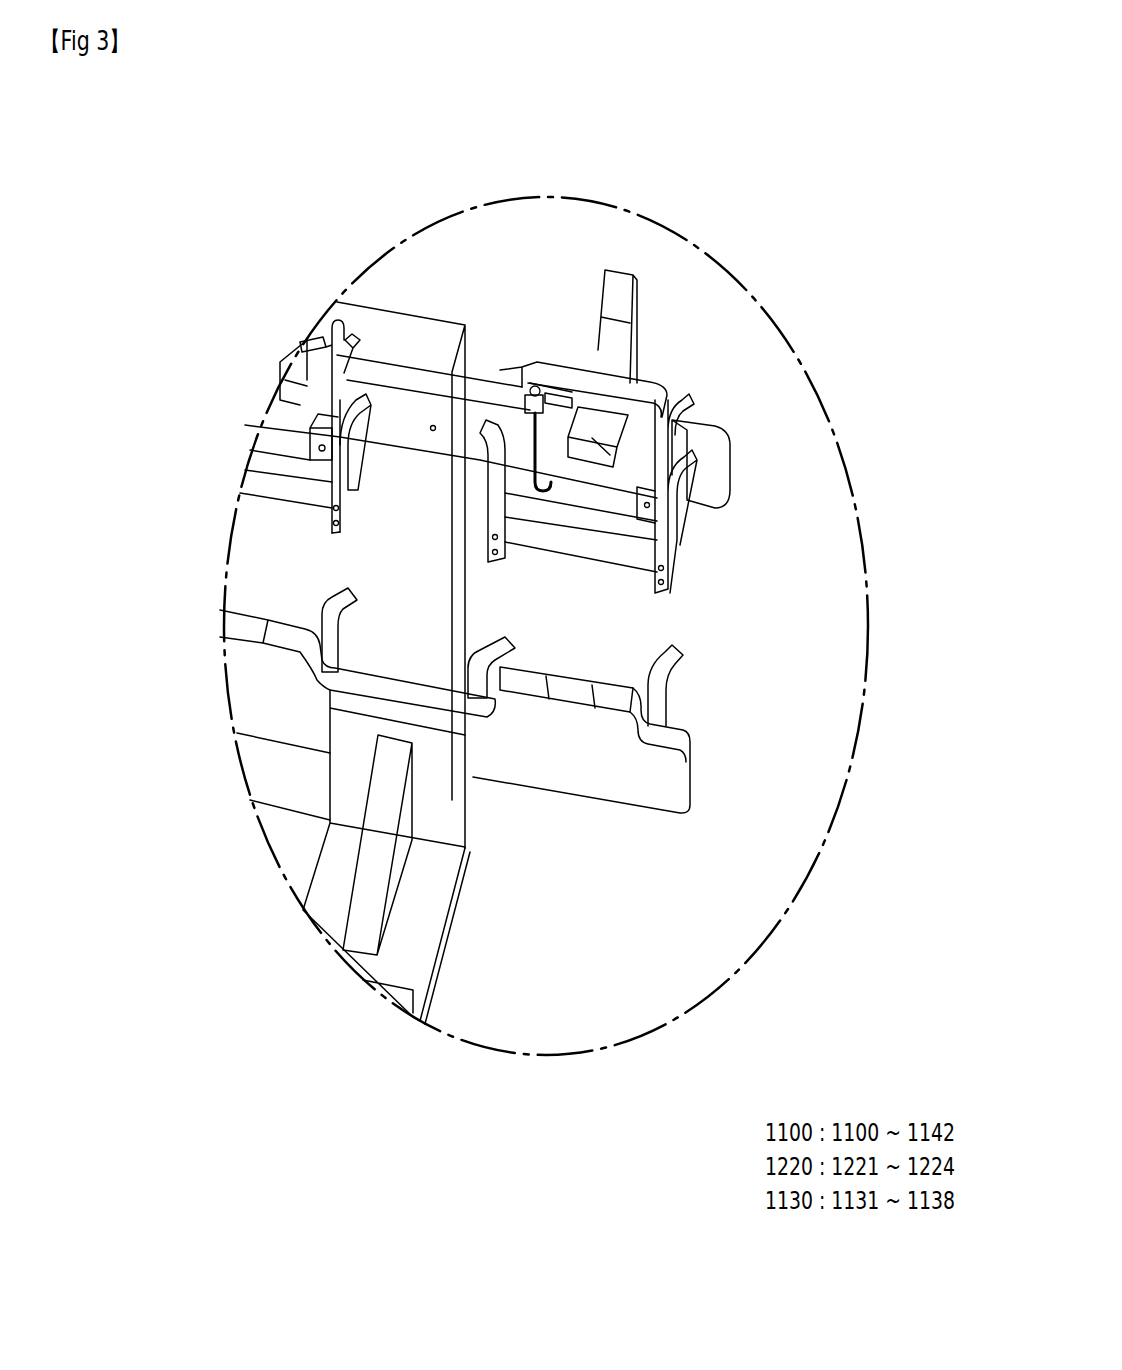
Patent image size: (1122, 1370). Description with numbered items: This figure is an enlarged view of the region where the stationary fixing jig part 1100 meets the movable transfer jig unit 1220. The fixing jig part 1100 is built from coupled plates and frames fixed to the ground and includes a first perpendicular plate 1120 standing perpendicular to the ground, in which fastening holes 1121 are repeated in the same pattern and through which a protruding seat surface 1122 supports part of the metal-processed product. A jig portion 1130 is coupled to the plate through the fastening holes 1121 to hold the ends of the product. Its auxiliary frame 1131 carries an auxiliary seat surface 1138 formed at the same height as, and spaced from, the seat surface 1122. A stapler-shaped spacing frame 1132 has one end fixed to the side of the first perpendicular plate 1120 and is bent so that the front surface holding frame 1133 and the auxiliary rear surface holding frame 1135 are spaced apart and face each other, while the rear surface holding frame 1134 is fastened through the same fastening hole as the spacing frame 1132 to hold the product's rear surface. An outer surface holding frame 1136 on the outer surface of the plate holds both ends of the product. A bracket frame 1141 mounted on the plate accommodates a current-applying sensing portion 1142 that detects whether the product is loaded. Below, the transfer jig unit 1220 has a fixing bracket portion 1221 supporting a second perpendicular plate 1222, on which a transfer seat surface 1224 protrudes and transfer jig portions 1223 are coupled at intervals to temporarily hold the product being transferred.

The fixing jig part 1100 is at (265, 530).
The first perpendicular plate 1120 is at (382, 372).
The fastening holes 1121 is at (433, 423).
The seat surface 1122 is at (643, 390).
The jig portion 1130 is at (602, 378).
The auxiliary frame 1131 is at (587, 462).
The spacing frame 1132 is at (633, 560).
The front surface holding frame 1133 is at (497, 436).
The rear surface holding frame 1134 is at (680, 397).
The auxiliary rear surface holding frame 1135 is at (640, 548).
The outer surface holding frame 1136 is at (617, 333).
The auxiliary seat surface 1138 is at (592, 438).
The bracket frame 1141 is at (560, 392).
The current-applying sensing portion 1142 is at (532, 385).
The transfer jig unit 1220 is at (525, 822).
The fixing bracket portion 1221 is at (407, 940).
The second perpendicular plate 1222 is at (661, 770).
The transfer jig portions 1223 is at (473, 622).
The transfer seat surface 1224 is at (573, 687).